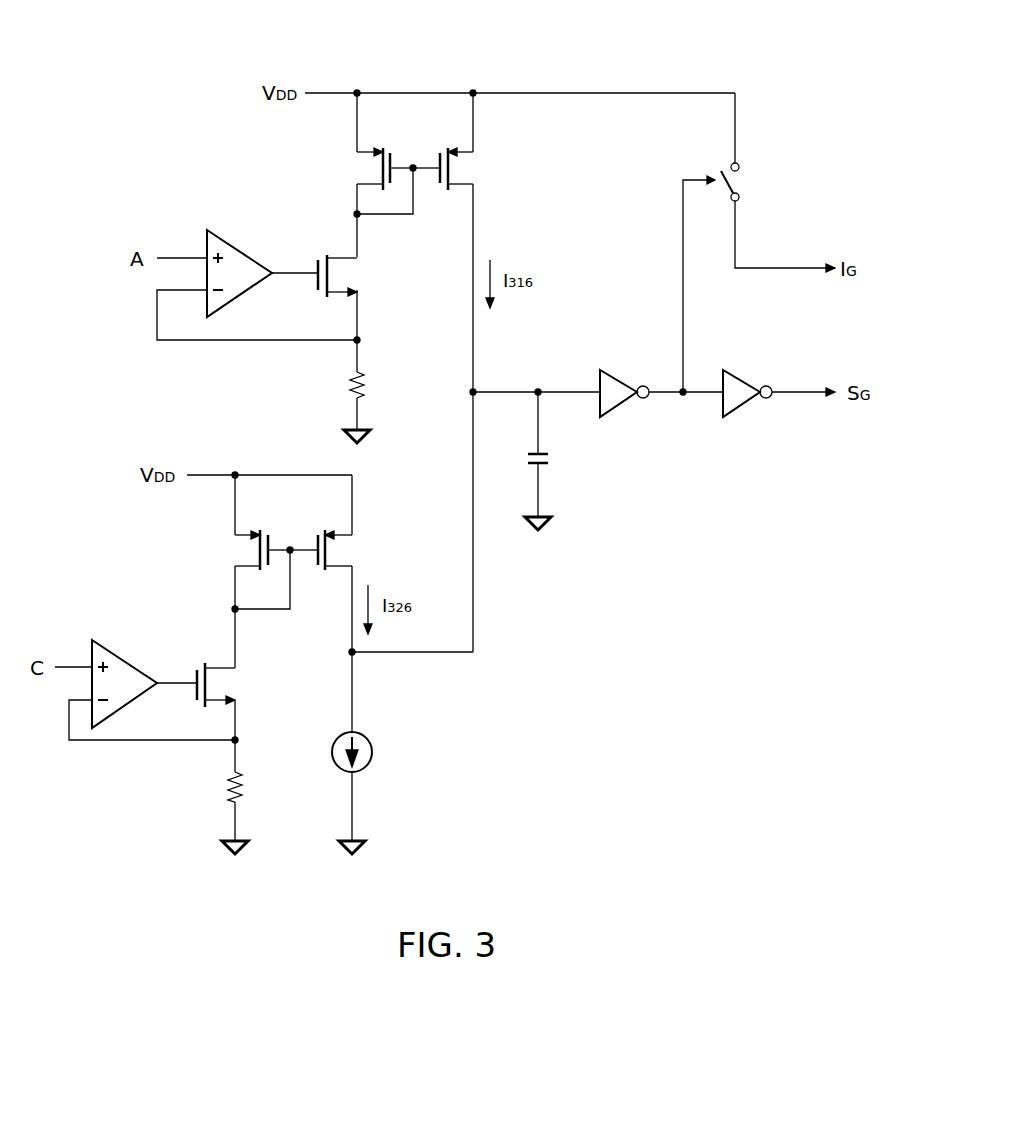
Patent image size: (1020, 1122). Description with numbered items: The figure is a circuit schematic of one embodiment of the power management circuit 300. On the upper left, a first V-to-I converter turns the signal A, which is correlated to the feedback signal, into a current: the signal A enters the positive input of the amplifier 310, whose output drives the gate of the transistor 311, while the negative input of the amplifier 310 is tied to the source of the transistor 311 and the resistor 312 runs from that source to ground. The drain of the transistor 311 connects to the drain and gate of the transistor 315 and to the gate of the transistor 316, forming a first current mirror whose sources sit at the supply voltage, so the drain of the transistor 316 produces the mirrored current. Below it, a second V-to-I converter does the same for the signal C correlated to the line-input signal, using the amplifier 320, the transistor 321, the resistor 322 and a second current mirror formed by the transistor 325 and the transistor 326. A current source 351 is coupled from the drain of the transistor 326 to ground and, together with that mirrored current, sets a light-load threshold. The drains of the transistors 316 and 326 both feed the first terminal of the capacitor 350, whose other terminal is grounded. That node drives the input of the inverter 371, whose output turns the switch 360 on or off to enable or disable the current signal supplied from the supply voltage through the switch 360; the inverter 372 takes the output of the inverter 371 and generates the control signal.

The power management circuit 300 is at (833, 88).
The amplifier 310 is at (246, 271).
The transistor 311 is at (341, 276).
The resistor 312 is at (378, 407).
The transistor 315 is at (364, 169).
The transistor 316 is at (465, 169).
The amplifier 320 is at (132, 681).
The transistor 321 is at (219, 685).
The resistor 322 is at (215, 813).
The transistor 325 is at (243, 550).
The transistor 326 is at (342, 550).
The capacitor 350 is at (561, 488).
The current source 351 is at (378, 793).
The switch 360 is at (754, 182).
The inverter 371 is at (629, 385).
The inverter 372 is at (755, 385).